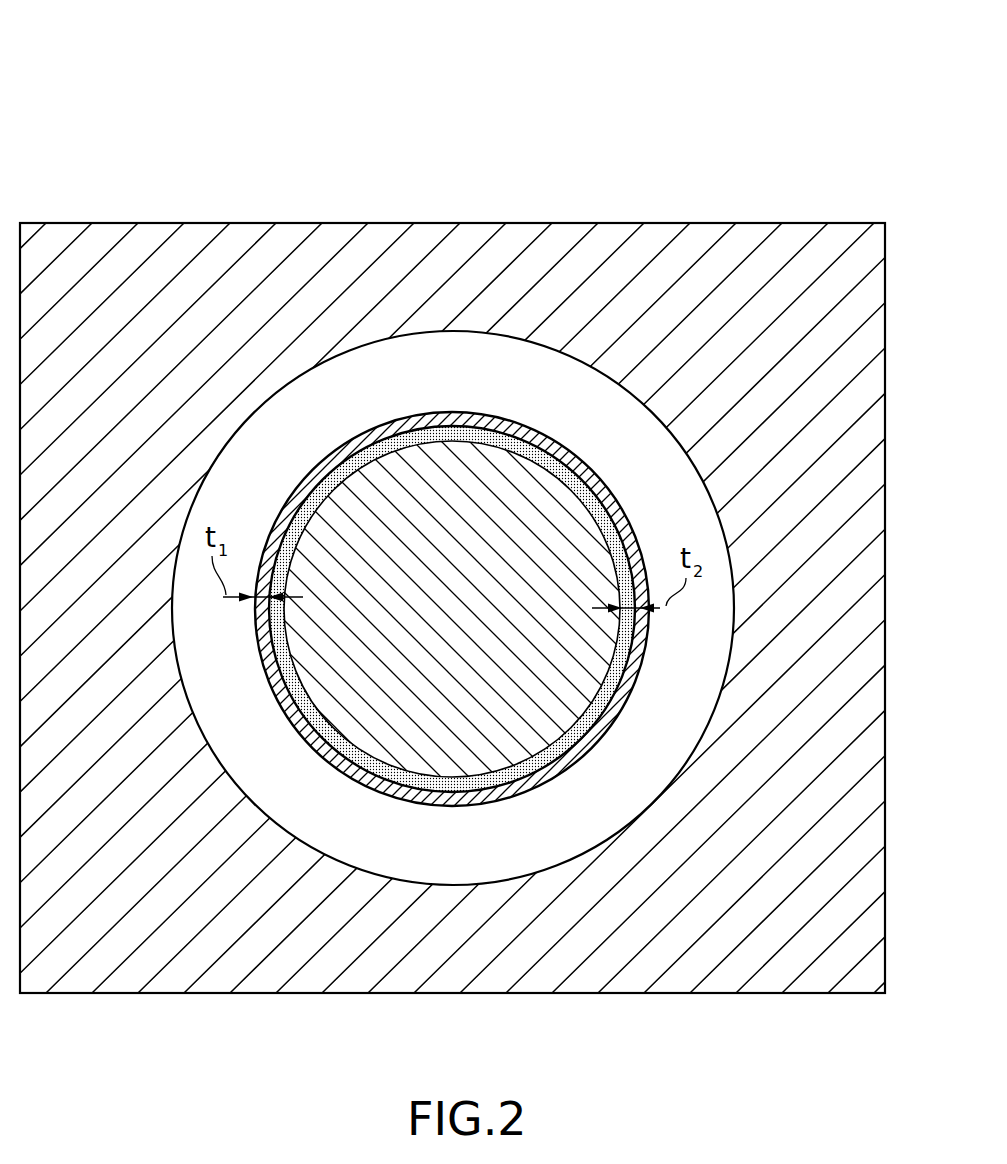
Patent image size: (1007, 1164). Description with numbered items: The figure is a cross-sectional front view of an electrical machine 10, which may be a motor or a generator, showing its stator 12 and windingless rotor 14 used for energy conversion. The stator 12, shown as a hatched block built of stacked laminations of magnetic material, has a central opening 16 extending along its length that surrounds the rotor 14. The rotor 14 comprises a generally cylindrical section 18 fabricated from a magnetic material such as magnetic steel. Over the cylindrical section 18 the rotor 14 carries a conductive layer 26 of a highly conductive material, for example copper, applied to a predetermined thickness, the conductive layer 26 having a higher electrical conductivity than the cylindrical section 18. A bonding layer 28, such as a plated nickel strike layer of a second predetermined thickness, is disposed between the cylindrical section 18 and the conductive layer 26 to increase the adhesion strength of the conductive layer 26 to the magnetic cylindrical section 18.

The electrical machine 10 is at (188, 66).
The stator 12 is at (698, 234).
The rotor 14 is at (547, 424).
The central opening 16 is at (463, 865).
The cylindrical section 18 is at (433, 472).
The conductive layer 26 is at (318, 470).
The bonding layer 28 is at (290, 515).